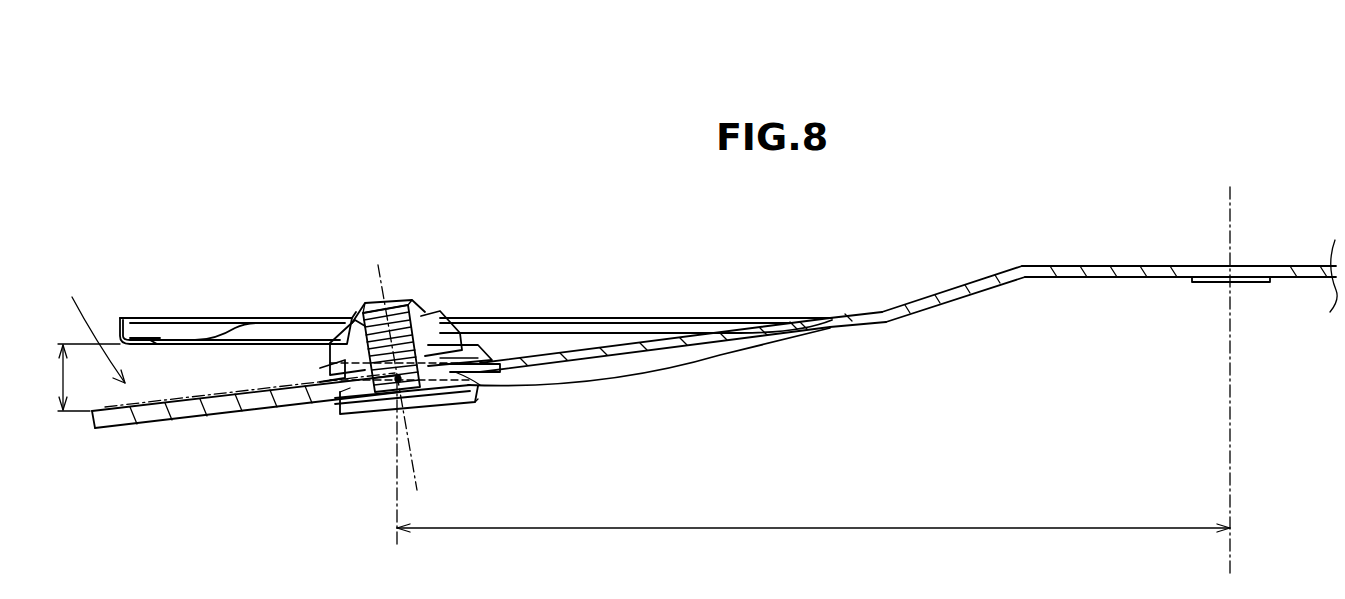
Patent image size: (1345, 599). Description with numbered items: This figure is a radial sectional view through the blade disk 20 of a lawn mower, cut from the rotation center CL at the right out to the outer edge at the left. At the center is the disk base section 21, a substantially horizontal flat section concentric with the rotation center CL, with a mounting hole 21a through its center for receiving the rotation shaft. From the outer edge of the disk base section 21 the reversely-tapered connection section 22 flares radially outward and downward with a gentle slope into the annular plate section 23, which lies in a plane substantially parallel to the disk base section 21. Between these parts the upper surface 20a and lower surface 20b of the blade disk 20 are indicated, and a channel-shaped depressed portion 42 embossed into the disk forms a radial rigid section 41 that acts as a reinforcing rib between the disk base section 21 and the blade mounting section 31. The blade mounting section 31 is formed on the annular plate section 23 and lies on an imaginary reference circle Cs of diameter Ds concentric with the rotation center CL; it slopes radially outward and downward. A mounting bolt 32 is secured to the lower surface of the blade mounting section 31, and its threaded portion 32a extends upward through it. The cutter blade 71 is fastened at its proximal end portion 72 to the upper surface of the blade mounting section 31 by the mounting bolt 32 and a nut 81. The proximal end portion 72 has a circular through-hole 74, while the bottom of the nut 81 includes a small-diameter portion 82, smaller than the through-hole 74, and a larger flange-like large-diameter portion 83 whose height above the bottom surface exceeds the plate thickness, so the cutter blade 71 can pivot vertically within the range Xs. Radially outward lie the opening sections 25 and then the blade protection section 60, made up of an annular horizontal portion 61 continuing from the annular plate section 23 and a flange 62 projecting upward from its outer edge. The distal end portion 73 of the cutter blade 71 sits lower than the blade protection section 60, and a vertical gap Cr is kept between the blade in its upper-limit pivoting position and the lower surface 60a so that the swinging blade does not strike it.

The blade disk 20 is at (565, 150).
The upper surface of the blade disk 20a is at (845, 316).
The lower surface of the blade disk 20b is at (825, 332).
The disk base section 21 is at (1068, 263).
The mounting hole 21a is at (1196, 268).
The reversely-tapered connection section 22 is at (930, 295).
The annular plate section 23 is at (665, 325).
The opening sections 25 is at (288, 340).
The blade mounting section 31 is at (326, 400).
The mounting bolt 32 is at (346, 416).
The threaded portion 32a is at (396, 304).
The radial rigid section 41 is at (565, 358).
The channel-shaped depressed portion 42 is at (540, 370).
The blade protection section 60 is at (118, 222).
The lower surface of the blade protection section 60a is at (190, 356).
The annular horizontal portion 61 is at (168, 335).
The flange 62 is at (136, 328).
The cutter blade 71 is at (185, 422).
The proximal end portion 72 is at (490, 360).
The distal end portion 73 is at (124, 422).
The through-hole 74 is at (383, 400).
The nut 81 is at (434, 320).
The small-diameter portion 82 is at (440, 386).
The large-diameter portion 83 is at (455, 350).
The rotation center CL is at (1228, 200).
The imaginary reference circle Cs is at (416, 485).
The vertical gap Cr is at (92, 325).
The diameter of the imaginary reference circle Ds is at (813, 516).
The vertical pivotable range Xs is at (77, 377).